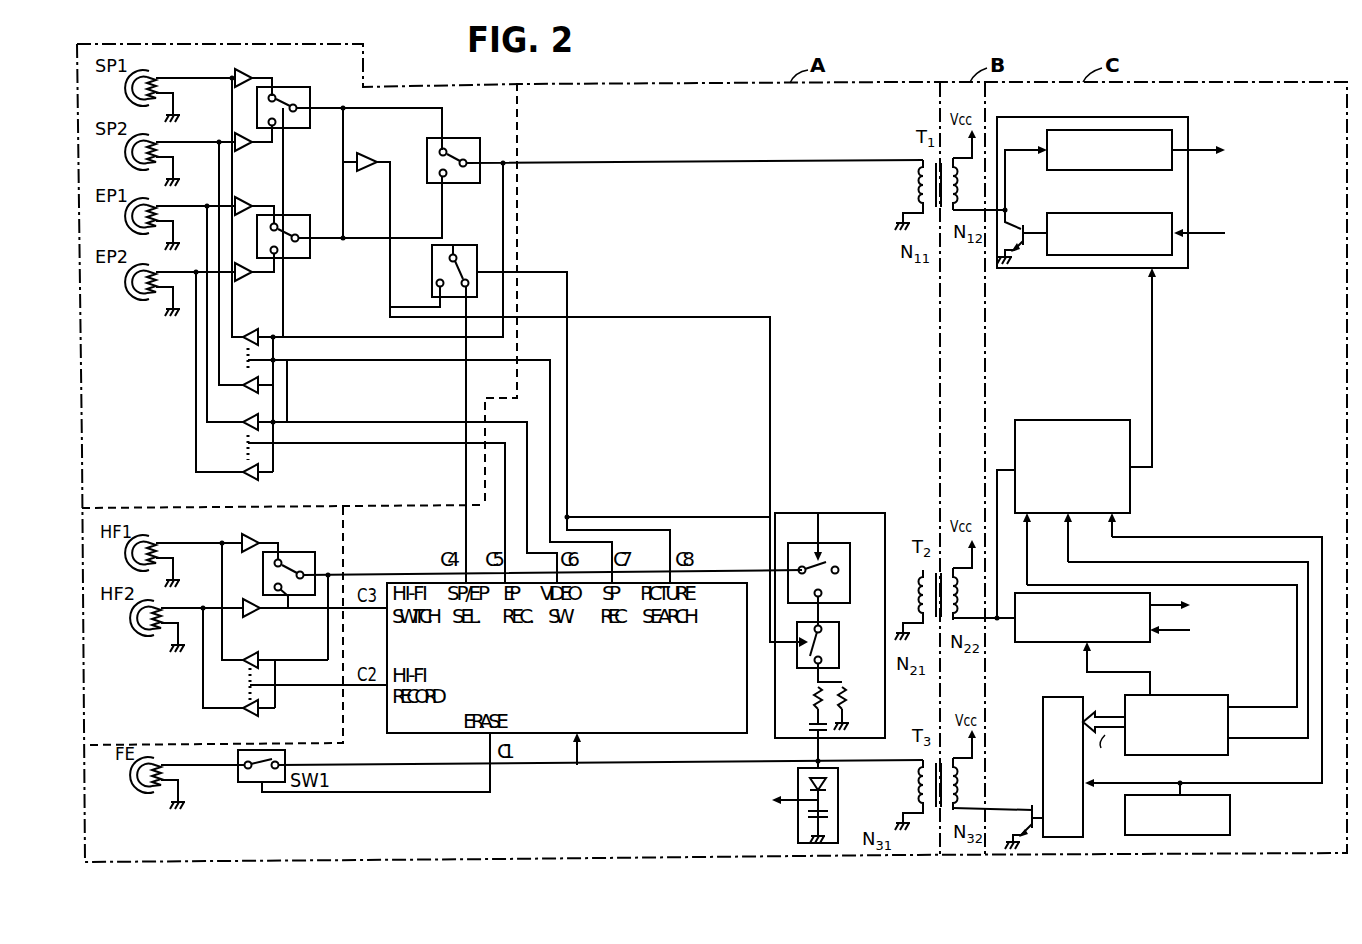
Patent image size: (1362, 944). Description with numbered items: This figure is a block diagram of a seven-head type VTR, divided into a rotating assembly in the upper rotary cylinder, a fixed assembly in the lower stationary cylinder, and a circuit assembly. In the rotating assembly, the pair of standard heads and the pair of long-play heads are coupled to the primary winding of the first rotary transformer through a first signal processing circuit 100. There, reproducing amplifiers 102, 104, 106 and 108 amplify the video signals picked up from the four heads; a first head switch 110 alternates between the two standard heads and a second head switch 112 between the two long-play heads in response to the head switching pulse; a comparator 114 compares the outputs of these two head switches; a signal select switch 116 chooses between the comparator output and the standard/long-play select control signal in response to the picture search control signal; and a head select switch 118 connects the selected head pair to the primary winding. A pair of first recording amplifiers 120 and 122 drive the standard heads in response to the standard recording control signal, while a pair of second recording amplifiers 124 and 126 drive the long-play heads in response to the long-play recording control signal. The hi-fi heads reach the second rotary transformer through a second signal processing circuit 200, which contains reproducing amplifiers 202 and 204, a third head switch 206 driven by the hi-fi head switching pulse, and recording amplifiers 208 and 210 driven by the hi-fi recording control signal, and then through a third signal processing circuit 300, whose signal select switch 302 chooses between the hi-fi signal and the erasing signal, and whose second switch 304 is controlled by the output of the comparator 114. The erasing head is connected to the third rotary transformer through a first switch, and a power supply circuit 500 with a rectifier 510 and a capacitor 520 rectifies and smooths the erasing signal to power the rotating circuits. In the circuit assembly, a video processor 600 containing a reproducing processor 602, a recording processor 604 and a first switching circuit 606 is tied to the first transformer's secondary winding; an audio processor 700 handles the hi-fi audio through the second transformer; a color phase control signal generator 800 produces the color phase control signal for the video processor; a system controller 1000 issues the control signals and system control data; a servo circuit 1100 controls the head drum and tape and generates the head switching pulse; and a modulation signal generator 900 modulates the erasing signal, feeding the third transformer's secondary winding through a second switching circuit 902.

The first signal processing circuit 100 is at (517, 128).
The reproducing amplifier 102 is at (256, 69).
The reproducing amplifier 104 is at (247, 149).
The reproducing amplifier 106 is at (253, 198).
The reproducing amplifier 108 is at (249, 277).
The first head switch 110 is at (279, 88).
The second head switch 112 is at (281, 216).
The comparator 114 is at (373, 149).
The signal select switch 116 is at (453, 245).
The head select switch 118 is at (446, 138).
The first recording amplifier 120 is at (256, 321).
The first recording amplifier 122 is at (241, 389).
The second recording amplifier 124 is at (246, 426).
The second recording amplifier 126 is at (243, 476).
The second signal processing circuit 200 is at (343, 530).
The reproducing amplifier 202 is at (258, 534).
The reproducing amplifier 204 is at (251, 617).
The third head switch 206 is at (281, 552).
The recording amplifier 208 is at (246, 667).
The recording amplifier 210 is at (248, 715).
The third signal processing circuit 300 is at (826, 513).
The signal select switch 302 is at (834, 543).
The second switch 304 is at (840, 646).
The power supply circuit 500 is at (798, 822).
The rectifier 510 is at (808, 777).
The capacitor 520 is at (836, 814).
The video processor 600 is at (1188, 263).
The reproducing processor 602 is at (1070, 170).
The recording processor 604 is at (1147, 213).
The first switching circuit 606 is at (1024, 226).
The audio processor 700 is at (1043, 642).
The color phase control signal generator 800 is at (1130, 492).
The modulation signal generator 900 is at (1043, 713).
The second switching circuit 902 is at (1030, 807).
The system controller 1000 is at (1196, 682).
The servo circuit 1100 is at (1230, 818).